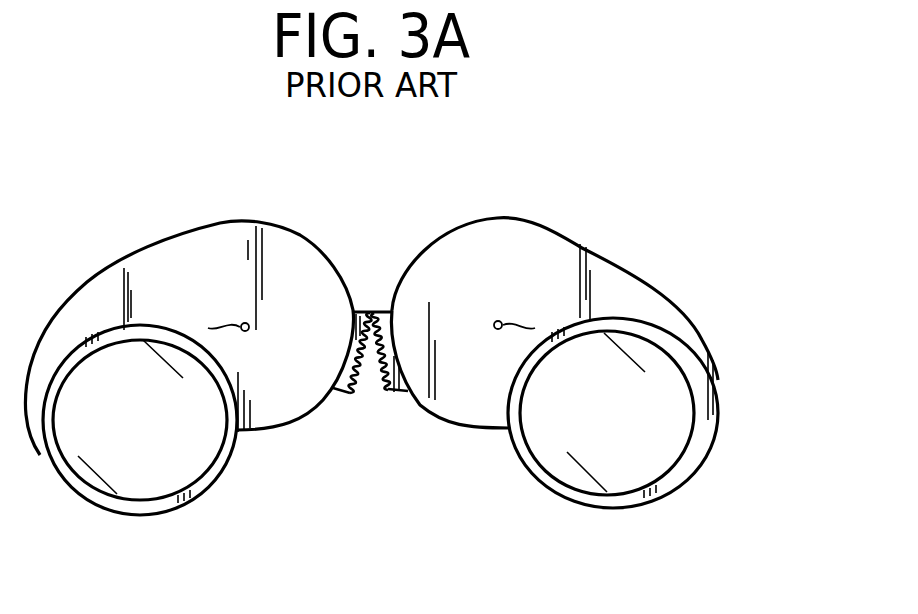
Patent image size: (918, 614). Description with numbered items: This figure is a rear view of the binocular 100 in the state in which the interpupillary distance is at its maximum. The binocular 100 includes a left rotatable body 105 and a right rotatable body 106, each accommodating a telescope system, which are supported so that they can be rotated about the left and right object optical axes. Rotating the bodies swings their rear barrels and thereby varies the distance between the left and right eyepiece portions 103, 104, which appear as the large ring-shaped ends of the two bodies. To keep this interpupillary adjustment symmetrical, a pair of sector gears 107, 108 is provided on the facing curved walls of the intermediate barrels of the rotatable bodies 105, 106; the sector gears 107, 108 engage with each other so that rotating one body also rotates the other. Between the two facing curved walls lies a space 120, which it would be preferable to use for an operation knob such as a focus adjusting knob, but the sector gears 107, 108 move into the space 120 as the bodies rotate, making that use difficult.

The binocular 100 is at (681, 253).
The eyepiece portion 103 is at (123, 508).
The eyepiece portion 104 is at (613, 500).
The left rotatable body 105 is at (126, 270).
The right rotatable body 106 is at (607, 254).
The sector gear 107 is at (342, 394).
The sector gear 108 is at (396, 392).
The space 120 is at (376, 241).